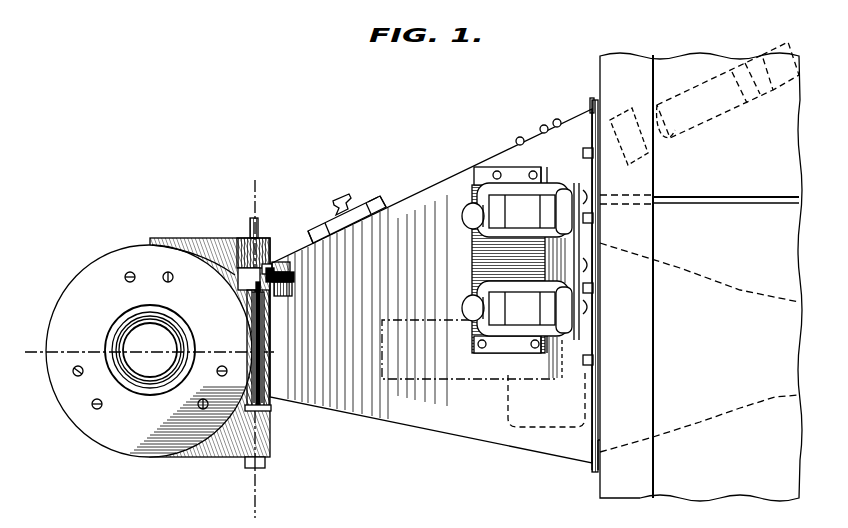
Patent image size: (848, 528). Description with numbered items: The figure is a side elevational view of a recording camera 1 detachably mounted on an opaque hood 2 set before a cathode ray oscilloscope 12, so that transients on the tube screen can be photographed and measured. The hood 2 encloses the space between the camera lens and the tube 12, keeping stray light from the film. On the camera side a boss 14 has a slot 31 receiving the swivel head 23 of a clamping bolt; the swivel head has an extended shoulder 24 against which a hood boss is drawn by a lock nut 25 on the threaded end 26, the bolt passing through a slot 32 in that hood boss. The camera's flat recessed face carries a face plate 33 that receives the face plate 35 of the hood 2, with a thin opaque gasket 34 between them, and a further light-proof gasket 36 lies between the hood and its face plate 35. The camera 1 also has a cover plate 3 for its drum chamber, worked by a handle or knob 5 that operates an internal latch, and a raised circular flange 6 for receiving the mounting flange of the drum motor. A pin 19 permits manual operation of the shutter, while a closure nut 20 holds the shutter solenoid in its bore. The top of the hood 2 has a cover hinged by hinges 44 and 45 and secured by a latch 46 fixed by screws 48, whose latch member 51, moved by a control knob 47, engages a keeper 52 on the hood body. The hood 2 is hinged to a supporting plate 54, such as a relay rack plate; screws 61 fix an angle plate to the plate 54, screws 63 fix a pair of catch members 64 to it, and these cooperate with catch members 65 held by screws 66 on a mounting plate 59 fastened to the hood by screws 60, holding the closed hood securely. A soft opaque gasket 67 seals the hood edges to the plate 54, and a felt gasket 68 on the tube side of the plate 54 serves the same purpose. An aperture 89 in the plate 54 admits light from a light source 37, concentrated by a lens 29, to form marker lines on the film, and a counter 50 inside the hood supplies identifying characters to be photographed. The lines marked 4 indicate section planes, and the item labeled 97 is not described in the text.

The camera 1 is at (188, 236).
The hood 2 is at (431, 286).
The cover plate 3 is at (117, 246).
The bolts / section line 4 is at (163, 277).
The handle or knob 5 is at (147, 387).
The raised circular ridge or flange 6 is at (31, 346).
The cathode ray oscilloscope 12 is at (738, 291).
The boss 14 is at (247, 270).
The pin 19 is at (257, 226).
The closure nut 20 is at (266, 467).
The swivel head 23 is at (242, 282).
The extended shoulder 24 is at (284, 267).
The lock nut 25 is at (290, 277).
The threaded end 26 is at (290, 288).
The lens 29 is at (637, 122).
The slot 31 is at (267, 266).
The slot 32 is at (272, 272).
The face plate 33 is at (256, 318).
The gasket 34 is at (262, 347).
The face plate 35 is at (266, 366).
The light-proof gasket 36 is at (254, 331).
The light source 37 is at (687, 103).
The hinge 44 is at (562, 121).
The hinge 45 is at (516, 143).
The latch 46 is at (357, 205).
The control knob 47 is at (340, 204).
The screws 48 is at (381, 220).
The counter 50 is at (460, 372).
The latch member 51 is at (332, 228).
The keeper 52 is at (318, 240).
The supporting plate 54 is at (594, 108).
The mounting plate 59 is at (484, 259).
The screws 60 is at (508, 176).
The screws 61 is at (591, 196).
The screws 63 is at (594, 157).
The catch members 64 is at (560, 205).
The catch members 65 is at (522, 228).
The screws 66 is at (544, 174).
The gasket 67 is at (591, 438).
The gasket 68 is at (600, 447).
The aperture 89 is at (597, 118).
The rim edge 97 is at (158, 246).